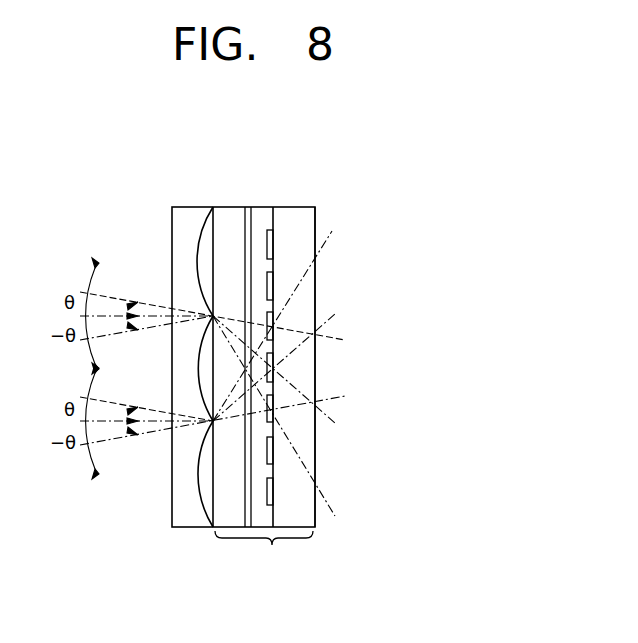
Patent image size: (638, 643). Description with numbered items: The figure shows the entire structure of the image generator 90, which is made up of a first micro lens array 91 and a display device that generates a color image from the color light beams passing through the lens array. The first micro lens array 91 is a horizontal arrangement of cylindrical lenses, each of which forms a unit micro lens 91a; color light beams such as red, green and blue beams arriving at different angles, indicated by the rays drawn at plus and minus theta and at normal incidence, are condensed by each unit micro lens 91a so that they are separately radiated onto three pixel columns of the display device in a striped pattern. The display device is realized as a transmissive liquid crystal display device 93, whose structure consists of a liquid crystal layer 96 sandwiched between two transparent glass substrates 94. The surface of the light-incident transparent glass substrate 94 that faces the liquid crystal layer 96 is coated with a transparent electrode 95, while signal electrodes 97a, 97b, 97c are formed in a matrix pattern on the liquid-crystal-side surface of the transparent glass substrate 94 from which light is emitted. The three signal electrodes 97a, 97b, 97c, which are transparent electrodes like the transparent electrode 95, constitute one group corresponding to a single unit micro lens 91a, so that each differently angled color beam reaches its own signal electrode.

The image generator 90 is at (143, 192).
The first micro lens array 91 is at (184, 217).
The unit micro lens 91a is at (200, 482).
The transmissive liquid crystal display device 93 is at (264, 550).
The transparent glass substrate 94 is at (228, 217).
The transparent electrode 95 is at (250, 523).
The liquid crystal layer 96 is at (268, 515).
The signal electrode 97a is at (275, 398).
The signal electrode 97b is at (275, 358).
The signal electrode 97c is at (275, 318).